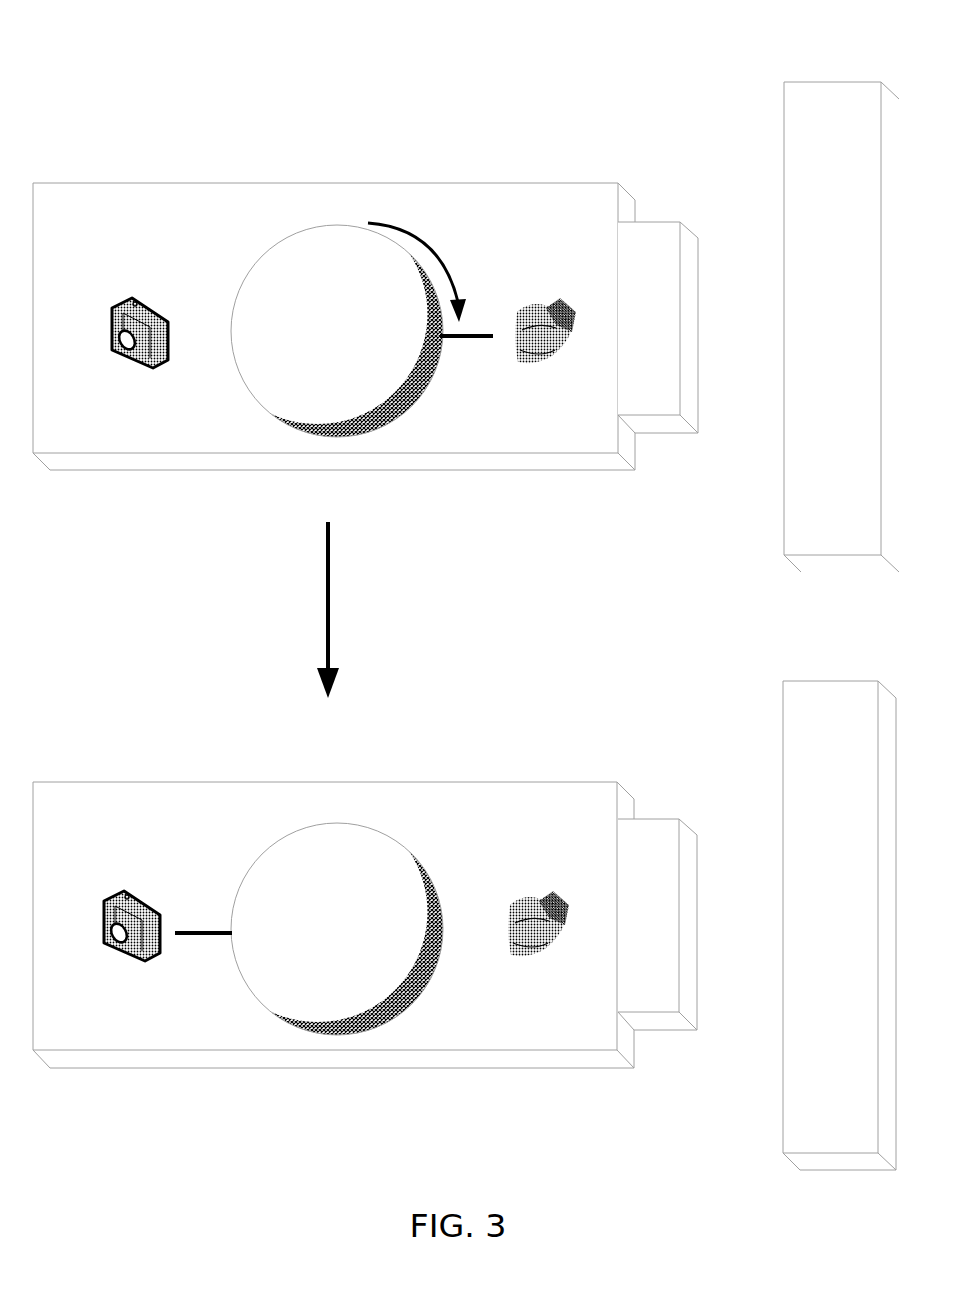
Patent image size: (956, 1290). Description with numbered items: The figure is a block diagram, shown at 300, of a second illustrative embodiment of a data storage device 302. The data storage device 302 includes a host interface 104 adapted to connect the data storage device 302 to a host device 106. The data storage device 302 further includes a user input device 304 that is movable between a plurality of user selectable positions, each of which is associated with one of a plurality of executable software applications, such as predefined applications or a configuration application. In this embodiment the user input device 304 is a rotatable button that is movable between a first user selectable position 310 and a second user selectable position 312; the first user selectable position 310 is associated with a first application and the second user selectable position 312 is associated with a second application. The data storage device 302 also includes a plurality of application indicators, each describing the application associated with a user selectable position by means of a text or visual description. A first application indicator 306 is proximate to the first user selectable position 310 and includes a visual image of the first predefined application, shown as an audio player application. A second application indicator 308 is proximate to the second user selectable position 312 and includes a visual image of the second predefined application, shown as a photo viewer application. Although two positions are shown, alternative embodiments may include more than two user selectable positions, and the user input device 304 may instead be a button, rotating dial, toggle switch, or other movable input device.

The block diagram of data storage device embodiment 300 is at (804, 38).
The data storage device 302 is at (324, 183).
The user input device 304 is at (231, 322).
The first application indicator 306 is at (527, 364).
The second application indicator 308 is at (148, 367).
The first user selectable position 310 is at (457, 352).
The second user selectable position 312 is at (210, 960).
The host interface 104 is at (648, 220).
The host device 106 is at (783, 102).